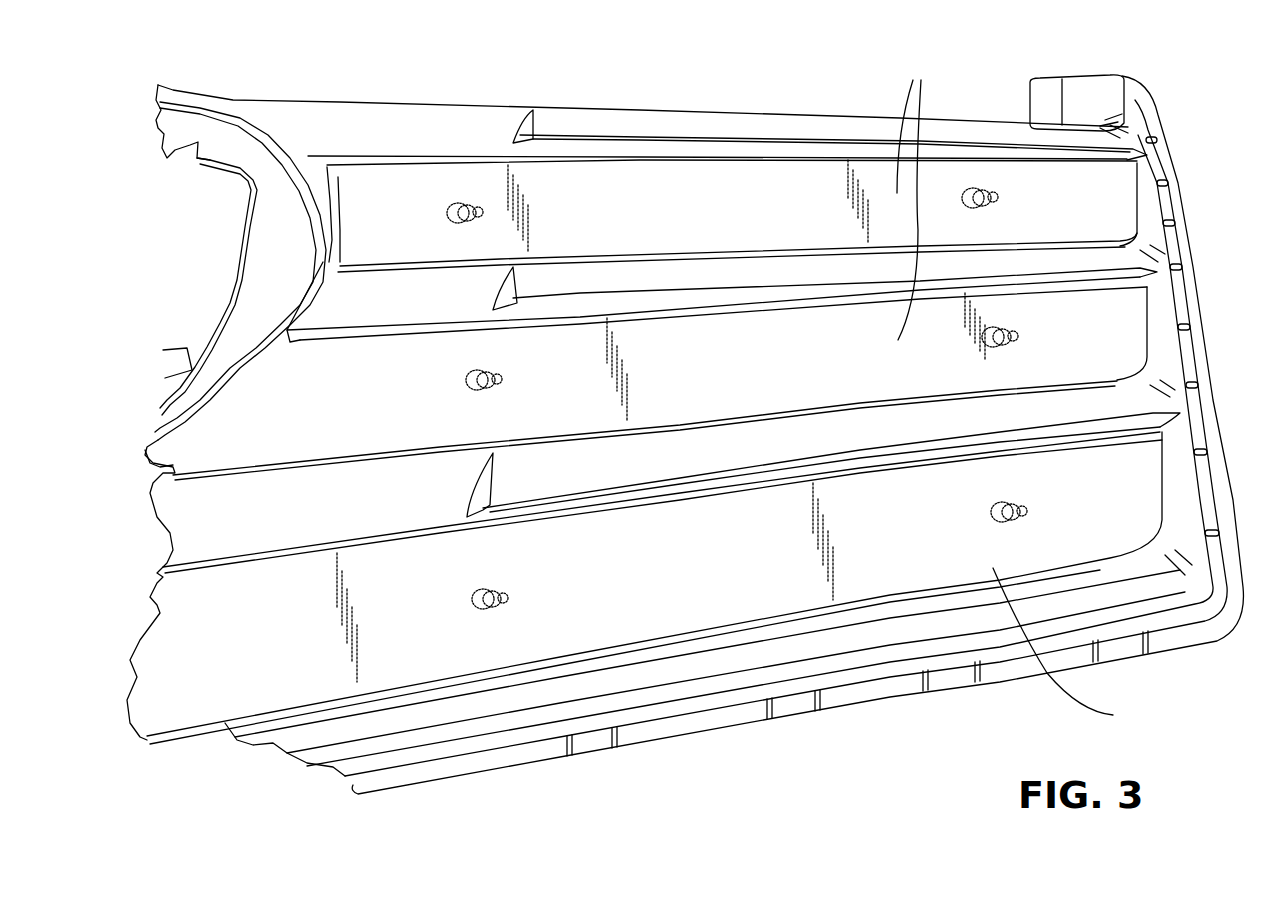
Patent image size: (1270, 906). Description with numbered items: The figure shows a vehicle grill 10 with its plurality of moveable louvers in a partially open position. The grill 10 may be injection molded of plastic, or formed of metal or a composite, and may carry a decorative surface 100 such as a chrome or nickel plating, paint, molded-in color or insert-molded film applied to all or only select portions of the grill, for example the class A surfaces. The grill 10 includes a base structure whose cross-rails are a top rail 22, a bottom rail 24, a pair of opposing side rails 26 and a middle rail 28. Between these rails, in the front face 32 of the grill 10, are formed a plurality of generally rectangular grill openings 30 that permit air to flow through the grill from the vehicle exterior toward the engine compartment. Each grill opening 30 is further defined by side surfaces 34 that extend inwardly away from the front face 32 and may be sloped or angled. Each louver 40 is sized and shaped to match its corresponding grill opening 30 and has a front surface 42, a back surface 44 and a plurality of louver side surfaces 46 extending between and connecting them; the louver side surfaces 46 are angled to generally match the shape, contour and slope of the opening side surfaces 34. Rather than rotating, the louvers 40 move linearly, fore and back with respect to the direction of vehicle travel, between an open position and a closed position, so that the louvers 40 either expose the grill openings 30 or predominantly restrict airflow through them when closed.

The grill 10 is at (462, 97).
The top rail 22 is at (385, 133).
The bottom rail 24 is at (657, 678).
The side rails 26 is at (1140, 237).
The middle rail 28 is at (410, 298).
The grill openings 30 is at (380, 287).
The front face 32 is at (313, 504).
The side surfaces 34 is at (1147, 360).
The louver 40 is at (642, 195).
The front surface 42 is at (812, 195).
The back surface 44 is at (473, 160).
The louver side surfaces 46 is at (313, 157).
The decorative surface 100 is at (1022, 390).